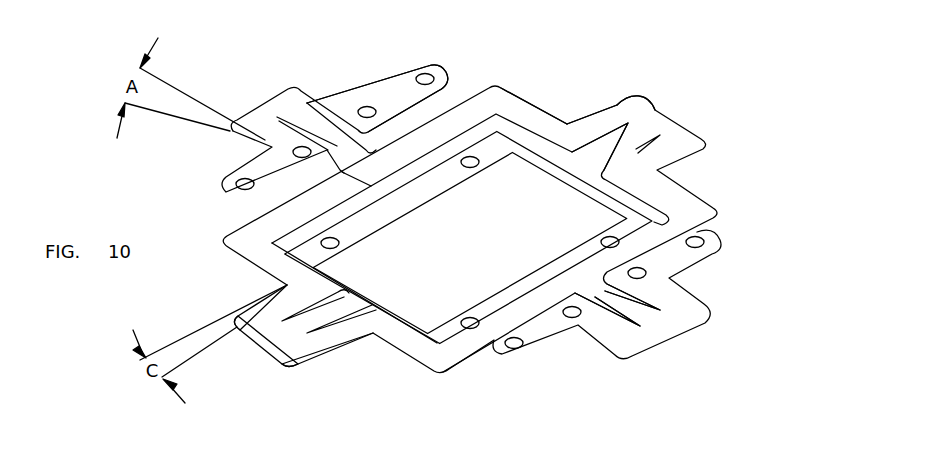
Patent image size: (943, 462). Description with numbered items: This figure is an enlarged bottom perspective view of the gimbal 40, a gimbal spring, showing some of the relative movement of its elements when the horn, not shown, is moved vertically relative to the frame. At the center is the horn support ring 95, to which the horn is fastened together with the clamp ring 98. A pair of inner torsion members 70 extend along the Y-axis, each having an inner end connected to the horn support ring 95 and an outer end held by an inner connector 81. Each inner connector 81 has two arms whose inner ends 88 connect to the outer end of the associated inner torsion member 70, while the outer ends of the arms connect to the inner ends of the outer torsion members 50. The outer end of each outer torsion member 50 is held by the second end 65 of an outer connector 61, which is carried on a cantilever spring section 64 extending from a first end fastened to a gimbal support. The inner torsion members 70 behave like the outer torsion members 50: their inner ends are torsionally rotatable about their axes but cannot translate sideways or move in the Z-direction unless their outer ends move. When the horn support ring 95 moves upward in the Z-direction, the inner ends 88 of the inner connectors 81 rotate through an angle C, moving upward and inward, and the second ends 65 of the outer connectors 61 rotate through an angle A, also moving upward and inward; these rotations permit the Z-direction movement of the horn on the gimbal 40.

The gimbal 40 is at (722, 153).
The outer torsion member 50 is at (303, 120).
The outer connector 61 is at (283, 92).
The cantilever spring section 64 is at (342, 98).
The second end 65 is at (310, 96).
The inner torsion member 70 is at (640, 136).
The inner connector 81 is at (533, 112).
The inner end 88 is at (633, 104).
The horn support ring 95 is at (413, 196).
The clamp ring 98 is at (598, 117).